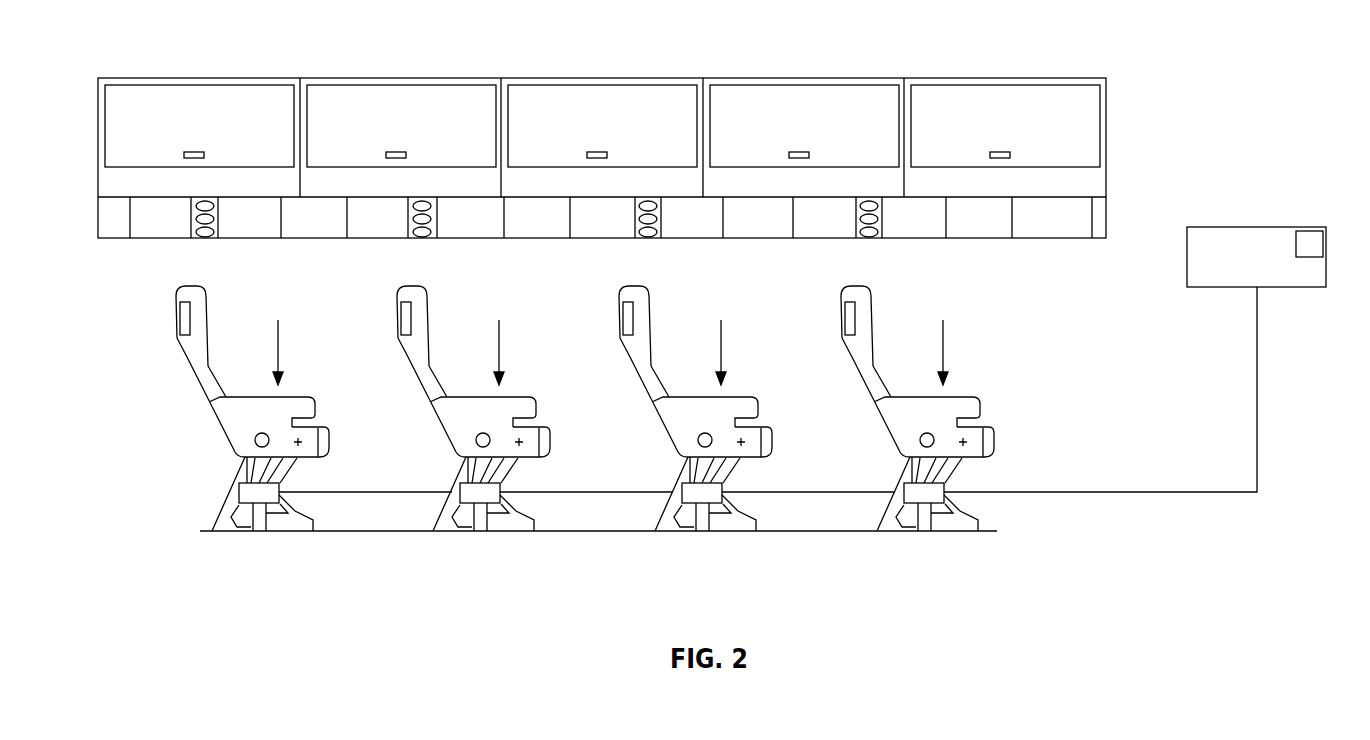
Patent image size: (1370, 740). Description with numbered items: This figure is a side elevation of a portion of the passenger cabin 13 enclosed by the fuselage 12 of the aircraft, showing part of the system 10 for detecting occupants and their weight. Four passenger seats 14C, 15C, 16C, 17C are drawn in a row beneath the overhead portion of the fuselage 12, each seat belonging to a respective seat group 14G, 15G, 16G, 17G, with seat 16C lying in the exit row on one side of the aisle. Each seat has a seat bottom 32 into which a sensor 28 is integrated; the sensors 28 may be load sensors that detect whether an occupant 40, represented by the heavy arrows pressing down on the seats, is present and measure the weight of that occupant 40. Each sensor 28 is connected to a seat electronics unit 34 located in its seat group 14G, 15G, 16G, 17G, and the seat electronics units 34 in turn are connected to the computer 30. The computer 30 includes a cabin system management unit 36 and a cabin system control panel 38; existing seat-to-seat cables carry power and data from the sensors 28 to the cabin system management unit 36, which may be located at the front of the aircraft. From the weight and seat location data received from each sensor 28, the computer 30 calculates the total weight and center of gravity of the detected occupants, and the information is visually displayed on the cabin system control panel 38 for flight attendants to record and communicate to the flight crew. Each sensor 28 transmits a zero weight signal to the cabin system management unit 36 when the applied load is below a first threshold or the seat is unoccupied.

The system 10 is at (727, 314).
The fuselage 12 is at (864, 74).
The passenger cabin 13 is at (615, 421).
The passenger seat 14C is at (882, 312).
The passenger seat 15C is at (609, 312).
The passenger seat 16C is at (387, 312).
The passenger seat 17C is at (188, 287).
The seat group 14G is at (949, 394).
The seat group 15G is at (701, 394).
The seat group 16G is at (479, 394).
The seat group 17G is at (258, 394).
The sensor 28 is at (254, 442).
The computer 30 is at (1150, 343).
The seat bottom 32 is at (330, 437).
The seat electronics unit 34 is at (248, 494).
The cabin system management unit 36 is at (1272, 278).
The cabin system control panel 38 is at (1310, 231).
The occupant 40 is at (280, 353).